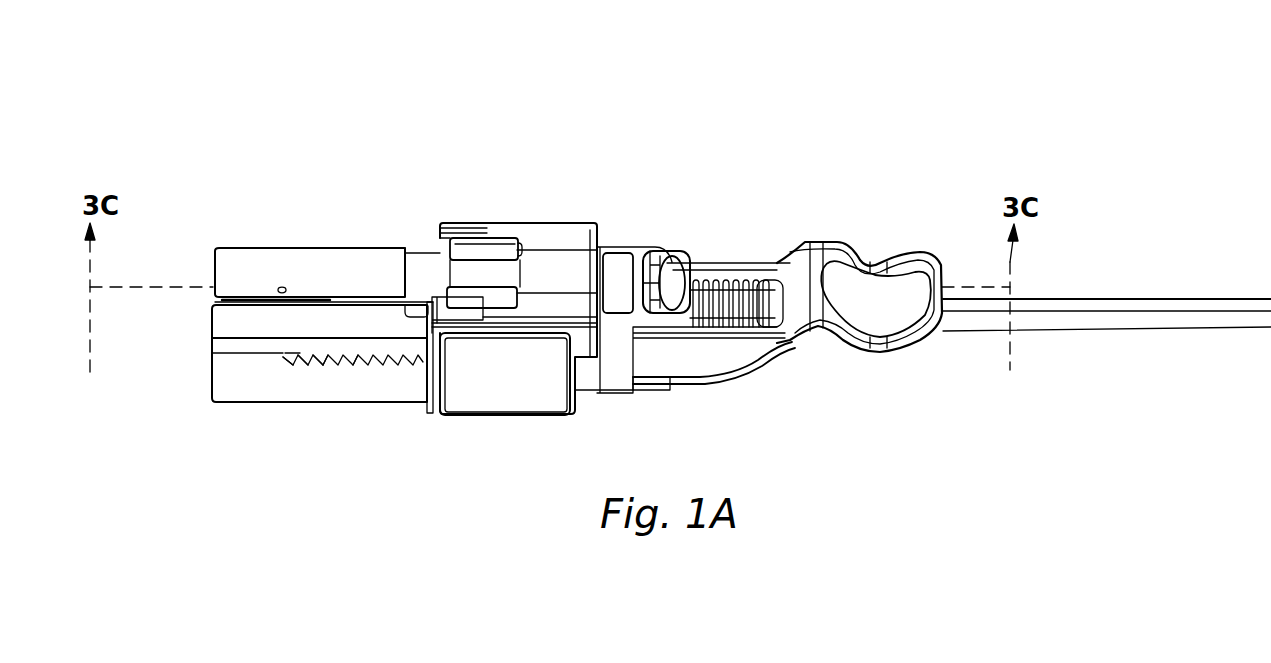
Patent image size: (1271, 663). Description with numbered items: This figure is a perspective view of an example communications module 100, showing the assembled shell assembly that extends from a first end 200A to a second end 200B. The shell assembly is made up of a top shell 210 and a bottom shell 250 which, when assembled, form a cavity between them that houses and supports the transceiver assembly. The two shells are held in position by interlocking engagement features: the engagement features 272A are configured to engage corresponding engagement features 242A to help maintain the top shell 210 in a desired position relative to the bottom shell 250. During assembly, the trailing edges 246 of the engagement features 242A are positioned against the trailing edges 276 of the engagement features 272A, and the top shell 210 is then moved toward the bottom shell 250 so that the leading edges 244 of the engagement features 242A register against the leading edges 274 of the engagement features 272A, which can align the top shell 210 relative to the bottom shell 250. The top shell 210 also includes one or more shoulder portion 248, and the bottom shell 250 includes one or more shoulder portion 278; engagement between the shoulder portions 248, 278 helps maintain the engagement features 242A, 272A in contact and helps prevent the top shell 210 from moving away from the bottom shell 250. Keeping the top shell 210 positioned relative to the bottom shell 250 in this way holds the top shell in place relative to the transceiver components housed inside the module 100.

The communications module 100 is at (645, 90).
The first end 200A is at (268, 228).
The second end 200B is at (536, 205).
The top shell 210 is at (225, 268).
The bottom shell 250 is at (222, 383).
The shoulder portion 248 is at (265, 390).
The trailing edge 246 is at (290, 357).
The leading edge 244 is at (333, 390).
The engagement feature 242A is at (353, 352).
The shoulder portion 278 is at (297, 337).
The trailing edge 276 is at (290, 355).
The leading edge 274 is at (328, 363).
The engagement feature 272A is at (357, 357).